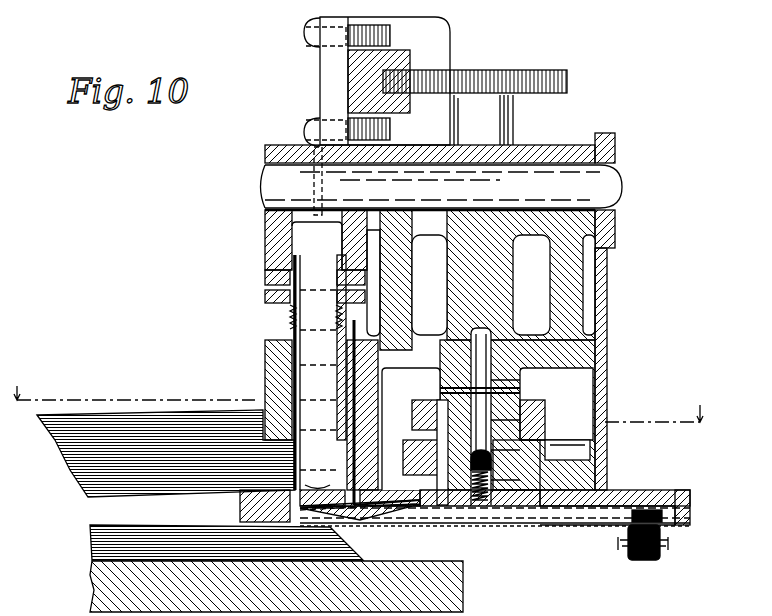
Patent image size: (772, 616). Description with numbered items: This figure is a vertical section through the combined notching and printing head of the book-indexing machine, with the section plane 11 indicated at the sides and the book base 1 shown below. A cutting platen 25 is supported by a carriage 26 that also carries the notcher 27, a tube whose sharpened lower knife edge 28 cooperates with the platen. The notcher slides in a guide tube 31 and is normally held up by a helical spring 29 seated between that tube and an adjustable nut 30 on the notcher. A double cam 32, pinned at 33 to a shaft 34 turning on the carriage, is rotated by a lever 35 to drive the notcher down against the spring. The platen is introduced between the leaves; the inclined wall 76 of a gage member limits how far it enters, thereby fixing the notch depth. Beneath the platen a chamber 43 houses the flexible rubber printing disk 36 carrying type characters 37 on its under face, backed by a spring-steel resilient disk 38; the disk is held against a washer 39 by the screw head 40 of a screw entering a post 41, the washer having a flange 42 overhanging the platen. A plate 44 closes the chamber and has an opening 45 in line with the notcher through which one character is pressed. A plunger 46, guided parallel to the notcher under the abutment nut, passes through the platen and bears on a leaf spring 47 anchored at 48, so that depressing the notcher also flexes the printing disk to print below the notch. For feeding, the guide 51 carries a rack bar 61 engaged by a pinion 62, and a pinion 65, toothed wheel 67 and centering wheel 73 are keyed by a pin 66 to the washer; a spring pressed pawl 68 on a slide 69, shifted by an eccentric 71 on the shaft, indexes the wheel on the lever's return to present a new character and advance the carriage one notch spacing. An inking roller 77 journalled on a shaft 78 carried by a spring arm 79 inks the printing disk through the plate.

The base 1 is at (463, 590).
The section line 11 is at (366, 393).
The cutting platen 25 is at (245, 503).
The carriage 26 is at (606, 325).
The notcher 27 is at (280, 338).
The knife edge 28 is at (296, 470).
The helical spring 29 is at (288, 318).
The adjustable nut 30 is at (268, 275).
The guide tube 31 is at (275, 358).
The double cam 32 is at (278, 228).
The pin 33 is at (316, 148).
The shaft 34 is at (280, 180).
The lever 35 is at (522, 232).
The printing disk 36 is at (582, 524).
The type characters 37 is at (650, 500).
The resilient disk 38 is at (645, 508).
The washer 39 is at (538, 522).
The screw head 40 is at (495, 508).
The post 41 is at (540, 478).
The flange 42 is at (580, 490).
The chamber 43 is at (688, 518).
The plate 44 is at (568, 524).
The opening 45 is at (348, 530).
The plunger 46 is at (385, 326).
The leaf spring 47 is at (395, 470).
The anchor 48 is at (412, 430).
The guide 51 is at (410, 50).
The rack bar 61 is at (400, 110).
The pinion 62 is at (495, 72).
The pinion 65 is at (540, 412).
The pin 66 is at (435, 524).
The toothed wheel 67 is at (425, 420).
The spring pressed pawl 68 is at (556, 456).
The slide 69 is at (600, 300).
The eccentric 71 is at (617, 236).
The toothed wheel 73 is at (540, 425).
The inclined wall 76 is at (292, 485).
The inking roller 77 is at (642, 560).
The shaft 78 is at (670, 547).
The spring arm 79 is at (668, 540).